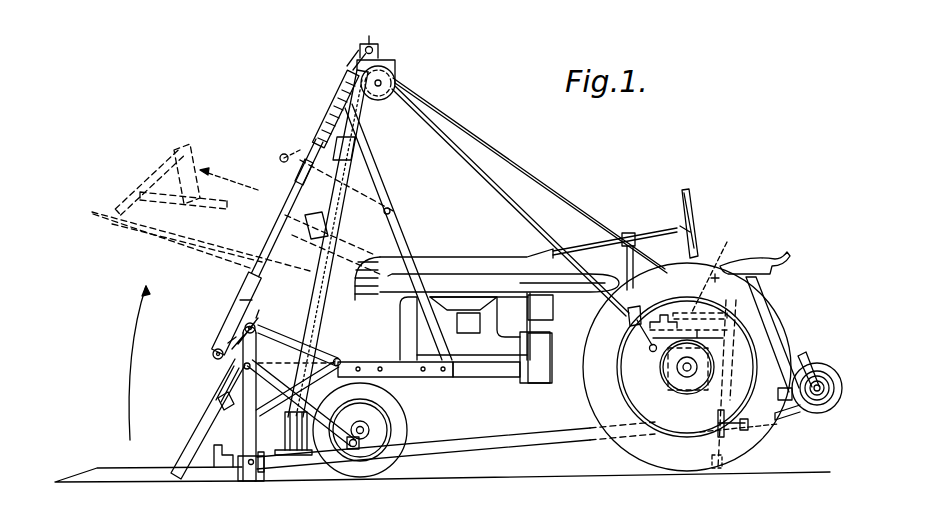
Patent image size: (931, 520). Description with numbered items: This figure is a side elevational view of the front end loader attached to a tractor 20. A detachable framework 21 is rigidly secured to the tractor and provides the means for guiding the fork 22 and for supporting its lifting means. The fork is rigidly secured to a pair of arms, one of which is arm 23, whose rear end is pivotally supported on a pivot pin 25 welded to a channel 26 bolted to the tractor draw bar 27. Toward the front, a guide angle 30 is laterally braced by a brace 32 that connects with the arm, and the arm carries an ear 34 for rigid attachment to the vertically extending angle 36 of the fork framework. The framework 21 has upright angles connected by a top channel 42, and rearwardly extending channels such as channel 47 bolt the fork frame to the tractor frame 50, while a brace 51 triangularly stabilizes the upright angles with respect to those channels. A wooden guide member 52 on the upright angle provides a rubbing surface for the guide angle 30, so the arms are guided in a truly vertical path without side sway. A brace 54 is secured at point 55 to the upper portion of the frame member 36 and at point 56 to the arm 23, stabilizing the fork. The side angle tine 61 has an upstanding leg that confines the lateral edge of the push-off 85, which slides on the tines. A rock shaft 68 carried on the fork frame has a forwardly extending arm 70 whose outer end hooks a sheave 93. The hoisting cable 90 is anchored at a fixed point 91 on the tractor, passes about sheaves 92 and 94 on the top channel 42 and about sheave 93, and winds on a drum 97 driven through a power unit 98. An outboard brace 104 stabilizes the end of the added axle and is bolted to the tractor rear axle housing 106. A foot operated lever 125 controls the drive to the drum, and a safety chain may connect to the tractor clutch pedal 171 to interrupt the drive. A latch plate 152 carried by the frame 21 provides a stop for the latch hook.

The tractor 20 is at (470, 258).
The framework 21 is at (366, 126).
The fork 22 is at (118, 186).
The arm 23 is at (489, 446).
The pivot pin 25 is at (714, 469).
The channel 26 is at (762, 432).
The tractor draw bar 27 is at (791, 423).
The guide angle 30 is at (295, 456).
The brace 32 is at (310, 456).
The ear 34 is at (250, 481).
The vertically extending angle 36 is at (262, 468).
The top channel 42 is at (361, 44).
The rearwardly extending channel 47 is at (410, 377).
The tractor frame 50 is at (478, 377).
The brace 51 is at (395, 222).
The wooden guide member 52 is at (308, 328).
The brace 54 is at (273, 383).
The securing point 55 is at (240, 363).
The securing point 56 is at (356, 450).
The side angle tine 61 is at (135, 476).
The rock shaft 68 is at (258, 327).
The forwardly extending arm 70 is at (232, 341).
The push-off 85 is at (177, 149).
The cable 90 is at (506, 185).
The cable anchor point 91 is at (645, 352).
The sheave 92 is at (381, 82).
The sheave 93 is at (240, 315).
The sheave 94 is at (340, 92).
The drum 97 is at (823, 372).
The power unit 98 is at (808, 351).
The outboard brace 104 is at (787, 322).
The housing 106 is at (660, 420).
The foot operated lever 125 is at (720, 271).
The latch plate 152 is at (310, 222).
The tractor clutch pedal 171 is at (627, 309).